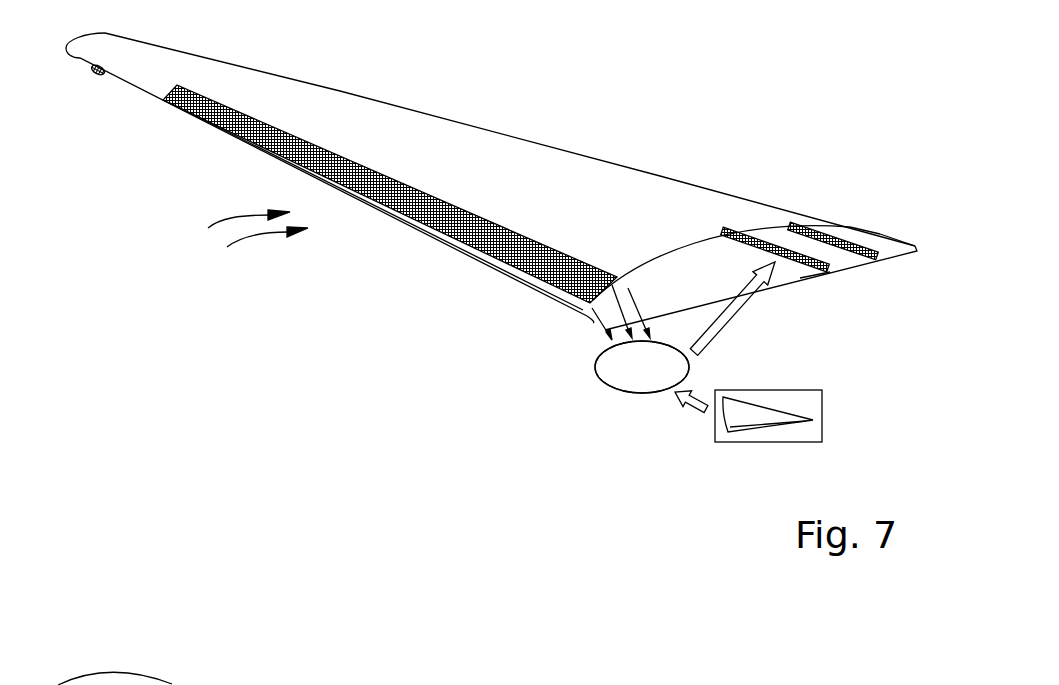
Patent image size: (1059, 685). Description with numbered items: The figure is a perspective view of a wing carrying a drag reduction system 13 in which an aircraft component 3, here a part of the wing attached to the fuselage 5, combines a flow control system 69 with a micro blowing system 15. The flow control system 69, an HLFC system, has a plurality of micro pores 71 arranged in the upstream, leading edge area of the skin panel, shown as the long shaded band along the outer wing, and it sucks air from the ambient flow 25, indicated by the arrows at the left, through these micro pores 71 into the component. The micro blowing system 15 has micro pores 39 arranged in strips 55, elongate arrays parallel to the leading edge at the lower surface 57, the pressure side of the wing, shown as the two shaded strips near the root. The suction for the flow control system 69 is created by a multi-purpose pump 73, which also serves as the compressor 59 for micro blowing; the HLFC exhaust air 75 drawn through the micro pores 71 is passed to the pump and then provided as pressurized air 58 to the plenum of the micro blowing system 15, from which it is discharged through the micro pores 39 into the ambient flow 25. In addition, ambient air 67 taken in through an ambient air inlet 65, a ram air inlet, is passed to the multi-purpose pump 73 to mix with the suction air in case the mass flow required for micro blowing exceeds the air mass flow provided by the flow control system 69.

The aircraft component 3 is at (708, 203).
The fuselage 5 is at (500, 150).
The drag reduction system 13 is at (852, 215).
The micro blowing system 15 is at (897, 240).
The ambient flow 25 is at (233, 218).
The micro pores 39 is at (830, 271).
The strips 55 is at (877, 257).
The lower surface 57 is at (800, 278).
The pressurized air 58 is at (703, 339).
The compressor 59 is at (602, 367).
The multi-purpose pump 73 is at (642, 367).
The ambient air inlet 65 is at (772, 423).
The ambient air 67 is at (690, 405).
The flow control system 69 is at (617, 248).
The micro pores 71 is at (447, 248).
The HLFC exhaust air 75 is at (592, 315).